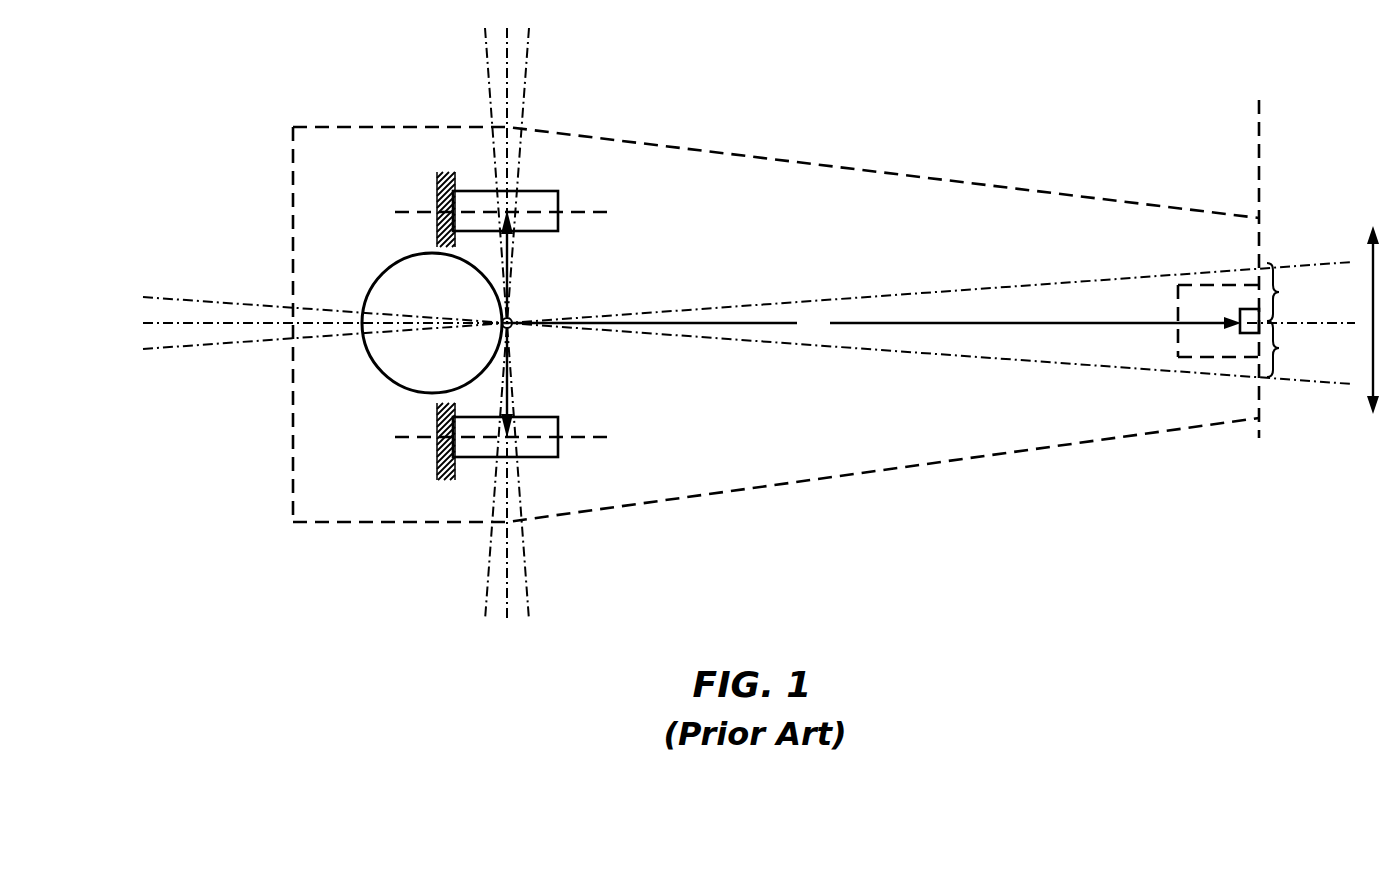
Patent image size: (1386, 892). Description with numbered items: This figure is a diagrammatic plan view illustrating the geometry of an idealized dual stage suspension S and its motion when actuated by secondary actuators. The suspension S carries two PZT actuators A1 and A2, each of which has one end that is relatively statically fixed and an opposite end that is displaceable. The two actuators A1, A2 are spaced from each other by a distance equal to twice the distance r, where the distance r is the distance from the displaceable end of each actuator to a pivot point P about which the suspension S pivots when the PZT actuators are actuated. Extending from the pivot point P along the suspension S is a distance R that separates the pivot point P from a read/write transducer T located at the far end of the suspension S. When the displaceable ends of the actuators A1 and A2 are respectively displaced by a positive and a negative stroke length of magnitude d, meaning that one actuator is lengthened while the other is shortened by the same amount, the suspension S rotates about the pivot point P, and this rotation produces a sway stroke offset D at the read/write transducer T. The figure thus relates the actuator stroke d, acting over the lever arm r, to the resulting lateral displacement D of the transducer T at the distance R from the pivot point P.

The suspension S is at (866, 110).
The pivot point P is at (512, 314).
The distance R is at (876, 324).
The PZT actuator A1 is at (559, 223).
The PZT actuator A2 is at (559, 424).
The distance r is at (510, 272).
The stroke length d is at (499, 190).
The read/write transducer T is at (1249, 306).
The sway stroke offset D is at (1286, 320).